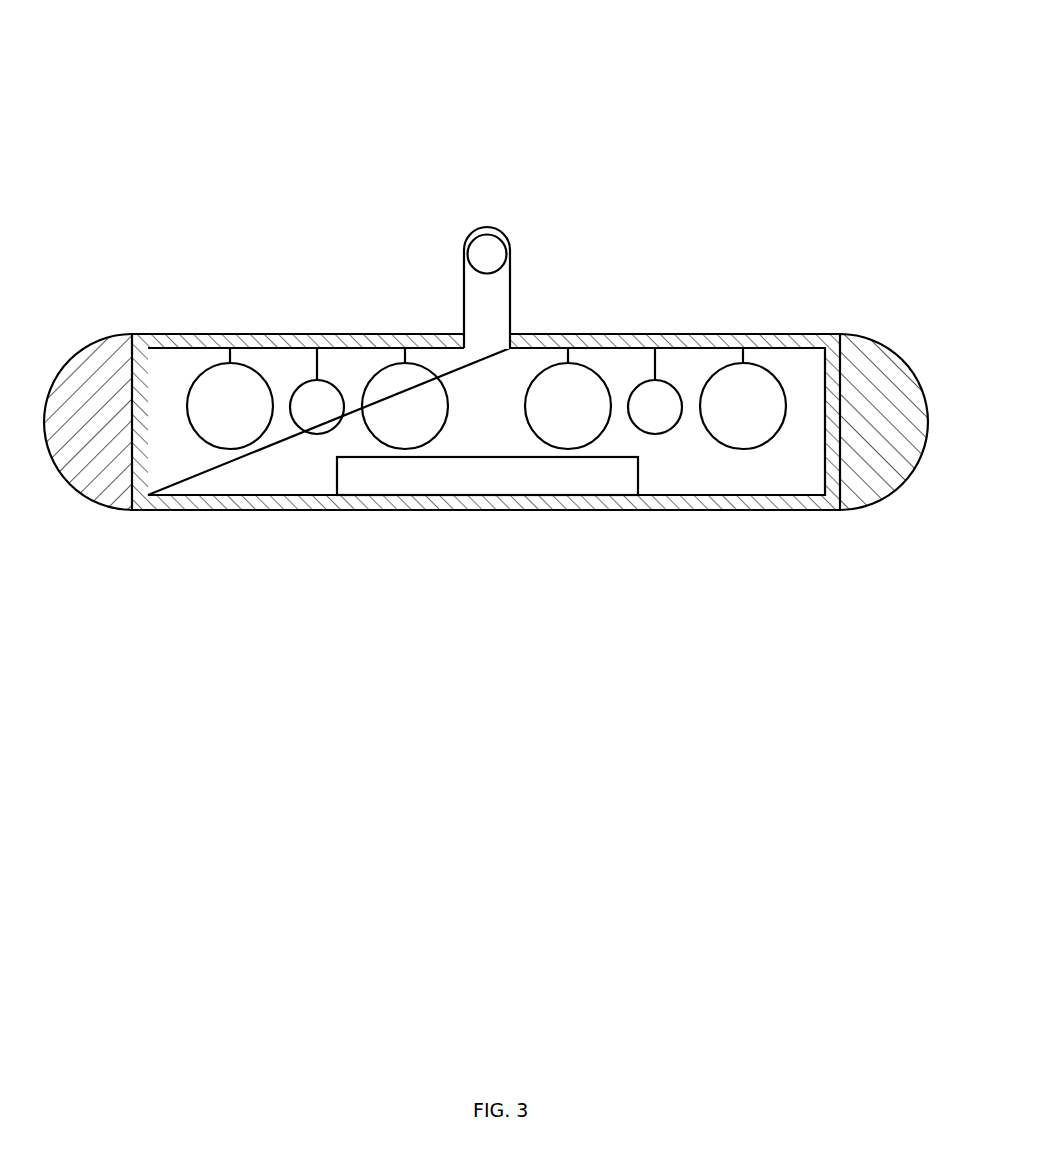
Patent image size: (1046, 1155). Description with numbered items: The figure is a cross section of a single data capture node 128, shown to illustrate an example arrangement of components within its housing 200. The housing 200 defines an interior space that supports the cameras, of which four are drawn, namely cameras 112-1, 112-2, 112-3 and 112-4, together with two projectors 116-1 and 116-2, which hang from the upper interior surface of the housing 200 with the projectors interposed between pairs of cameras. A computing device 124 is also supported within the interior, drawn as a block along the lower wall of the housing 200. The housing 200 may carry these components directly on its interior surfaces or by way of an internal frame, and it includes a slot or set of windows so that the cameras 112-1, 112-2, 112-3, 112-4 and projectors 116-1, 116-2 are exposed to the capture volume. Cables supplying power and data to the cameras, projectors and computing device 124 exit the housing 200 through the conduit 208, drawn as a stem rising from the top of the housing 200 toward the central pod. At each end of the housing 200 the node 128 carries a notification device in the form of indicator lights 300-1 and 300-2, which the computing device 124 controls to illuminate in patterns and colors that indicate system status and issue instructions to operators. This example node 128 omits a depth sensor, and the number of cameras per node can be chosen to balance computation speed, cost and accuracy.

The node 128 is at (700, 107).
The housing 200 is at (731, 524).
The indicator light 300-1 is at (83, 347).
The indicator light 300-2 is at (892, 495).
The conduit 208 is at (507, 237).
The camera 112-1 is at (203, 417).
The camera 112-2 is at (378, 417).
The camera 112-3 is at (541, 417).
The camera 112-4 is at (716, 417).
The projector 116-1 is at (334, 390).
The projector 116-2 is at (673, 388).
The computing device 124 is at (480, 472).